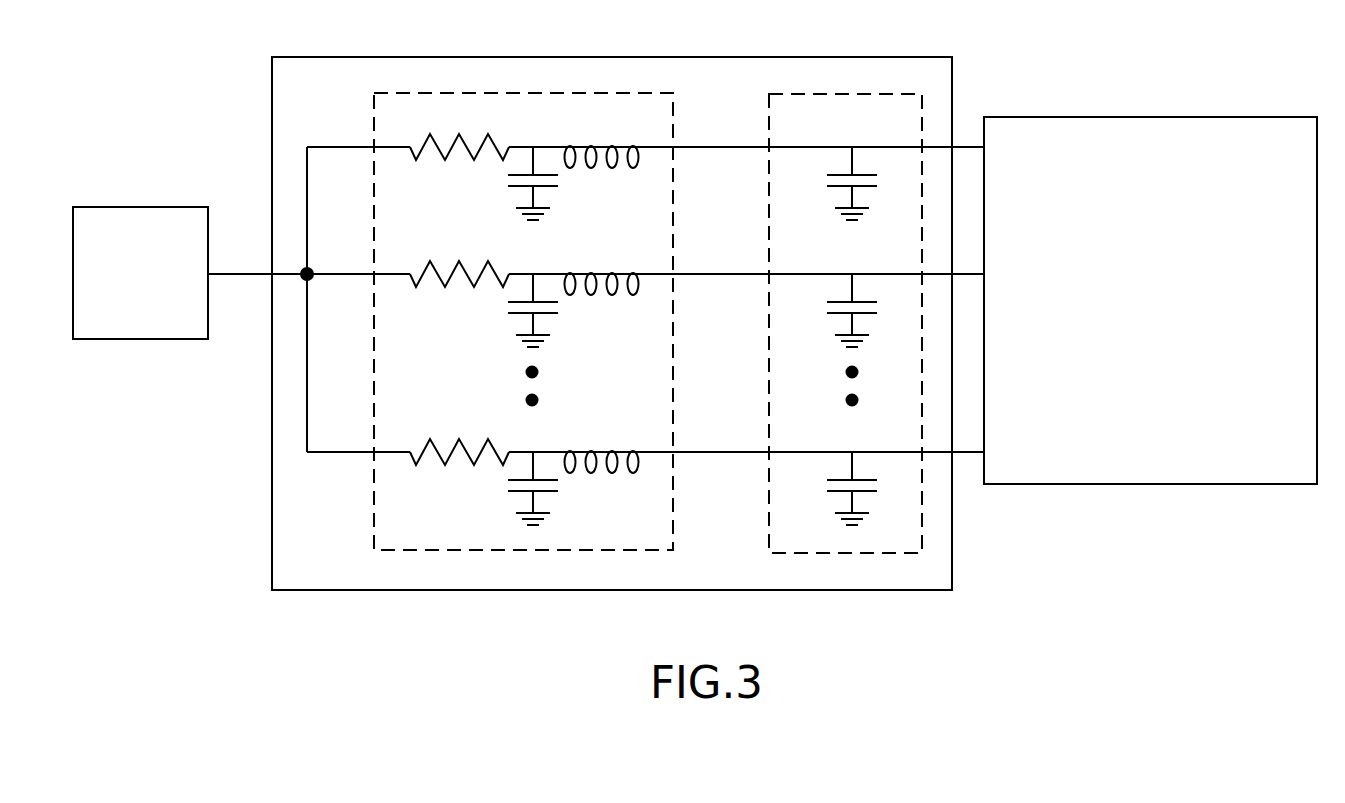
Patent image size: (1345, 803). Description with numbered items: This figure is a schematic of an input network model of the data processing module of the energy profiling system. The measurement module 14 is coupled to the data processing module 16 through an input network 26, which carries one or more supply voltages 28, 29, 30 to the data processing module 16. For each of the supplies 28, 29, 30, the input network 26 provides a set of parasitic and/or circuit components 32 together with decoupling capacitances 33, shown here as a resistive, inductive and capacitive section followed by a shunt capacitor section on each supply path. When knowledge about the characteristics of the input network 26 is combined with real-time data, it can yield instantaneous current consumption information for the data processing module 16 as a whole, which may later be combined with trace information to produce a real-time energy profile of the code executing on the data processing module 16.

The measurement module 14 is at (153, 308).
The data processing module 16 is at (1138, 313).
The input network 26 is at (768, 58).
The supply voltage 28 is at (965, 148).
The supply voltage 29 is at (970, 274).
The supply voltage 30 is at (969, 452).
The parasitic and/or circuit components 32 is at (435, 550).
The decoupling capacitances 33 is at (845, 553).